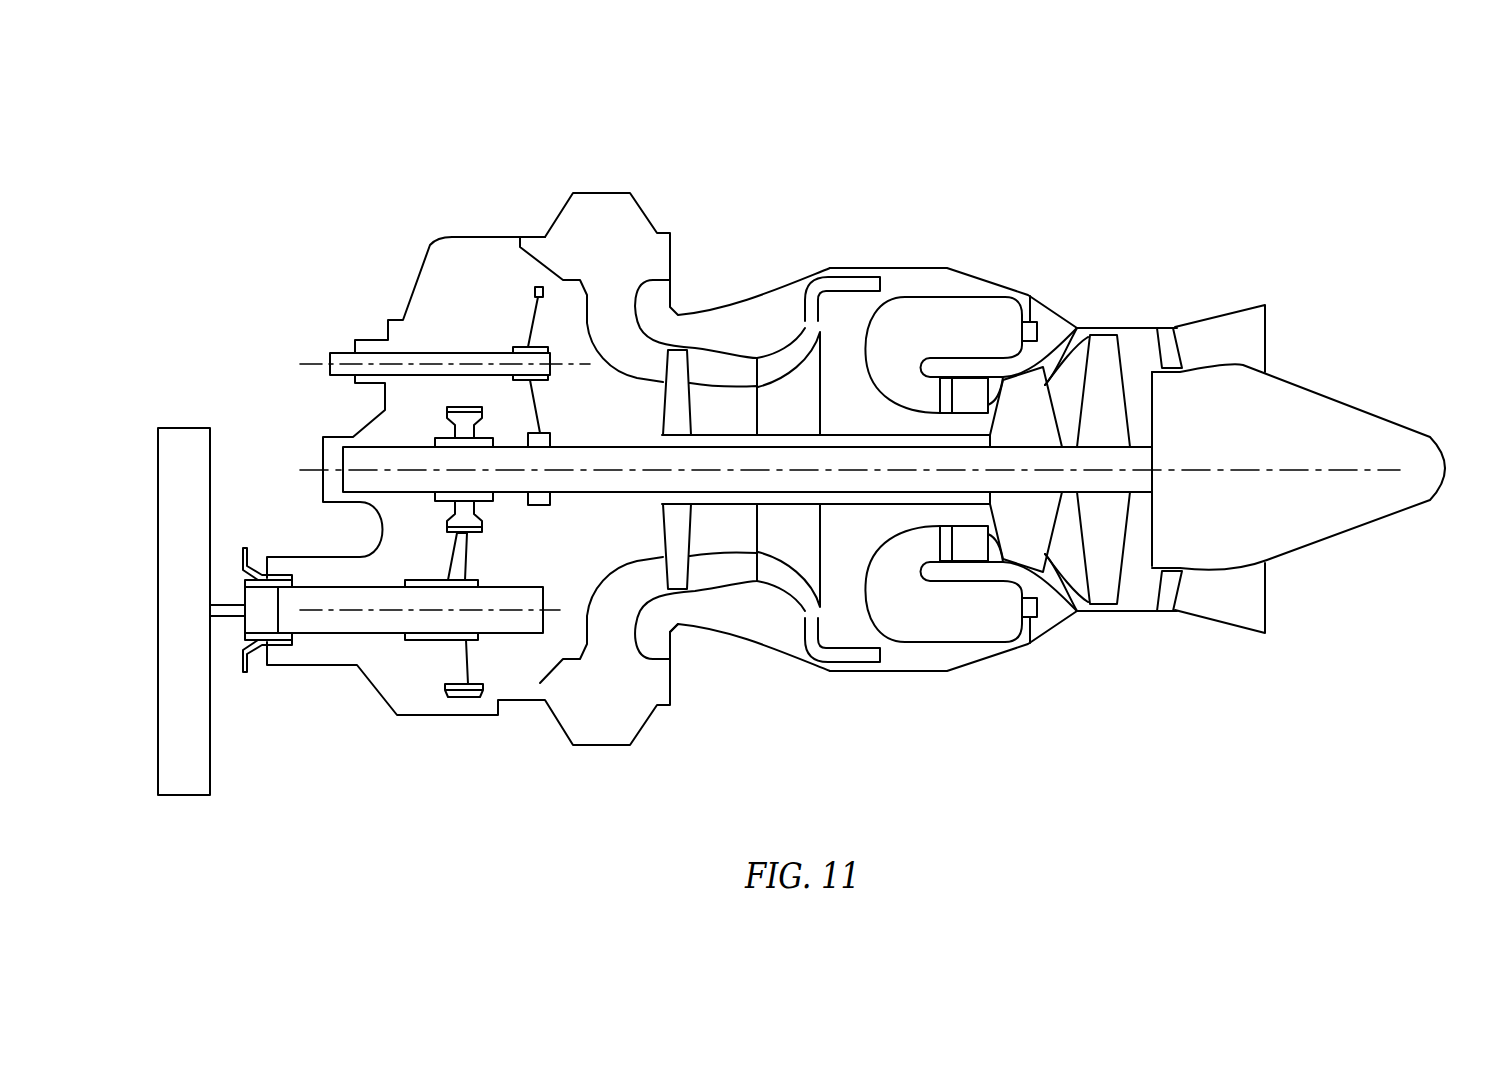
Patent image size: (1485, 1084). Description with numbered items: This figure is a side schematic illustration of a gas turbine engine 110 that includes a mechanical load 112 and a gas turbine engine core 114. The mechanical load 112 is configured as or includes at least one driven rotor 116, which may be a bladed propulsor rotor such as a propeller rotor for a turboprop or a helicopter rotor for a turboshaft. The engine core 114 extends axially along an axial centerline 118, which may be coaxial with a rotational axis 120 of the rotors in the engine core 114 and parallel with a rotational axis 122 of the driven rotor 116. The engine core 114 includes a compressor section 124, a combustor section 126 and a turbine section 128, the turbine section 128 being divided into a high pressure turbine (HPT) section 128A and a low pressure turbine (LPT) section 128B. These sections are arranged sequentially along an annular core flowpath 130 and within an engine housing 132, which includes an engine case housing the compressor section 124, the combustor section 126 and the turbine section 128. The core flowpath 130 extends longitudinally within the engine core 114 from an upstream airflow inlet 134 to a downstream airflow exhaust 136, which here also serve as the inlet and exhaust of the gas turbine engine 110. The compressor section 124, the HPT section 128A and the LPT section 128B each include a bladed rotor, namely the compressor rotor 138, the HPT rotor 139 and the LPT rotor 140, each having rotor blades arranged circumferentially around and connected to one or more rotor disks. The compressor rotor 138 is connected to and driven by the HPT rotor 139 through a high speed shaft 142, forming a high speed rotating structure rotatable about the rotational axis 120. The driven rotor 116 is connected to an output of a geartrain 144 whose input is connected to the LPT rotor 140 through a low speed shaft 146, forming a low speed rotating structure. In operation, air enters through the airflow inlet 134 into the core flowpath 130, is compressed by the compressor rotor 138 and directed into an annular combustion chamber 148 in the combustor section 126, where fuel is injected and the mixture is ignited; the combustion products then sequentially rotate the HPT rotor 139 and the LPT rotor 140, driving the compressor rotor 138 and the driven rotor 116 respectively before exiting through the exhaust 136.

The gas turbine engine 110 is at (286, 180).
The mechanical load 112 is at (188, 380).
The gas turbine engine core 114 is at (984, 218).
The driven rotor 116 is at (157, 488).
The axial centerline 118 is at (1298, 466).
The rotational axis 120 is at (1210, 470).
The rotational axis 122 is at (335, 613).
The compressor section 124 is at (774, 334).
The combustor section 126 is at (935, 270).
The turbine section 128 is at (1094, 402).
The high pressure turbine (HPT) section 128A is at (1050, 350).
The low pressure turbine (LPT) section 128B is at (1047, 255).
The core flowpath 130 is at (631, 308).
The engine housing 132 is at (825, 256).
The airflow inlet 134 is at (622, 192).
The airflow exhaust 136 is at (1267, 340).
The compressor rotor 138 is at (660, 418).
The HPT rotor 139 is at (940, 403).
The LPT rotor 140 is at (1130, 415).
The high speed shaft 142 is at (850, 503).
The geartrain 144 is at (438, 718).
The low speed shaft 146 is at (607, 495).
The combustion chamber 148 is at (985, 338).